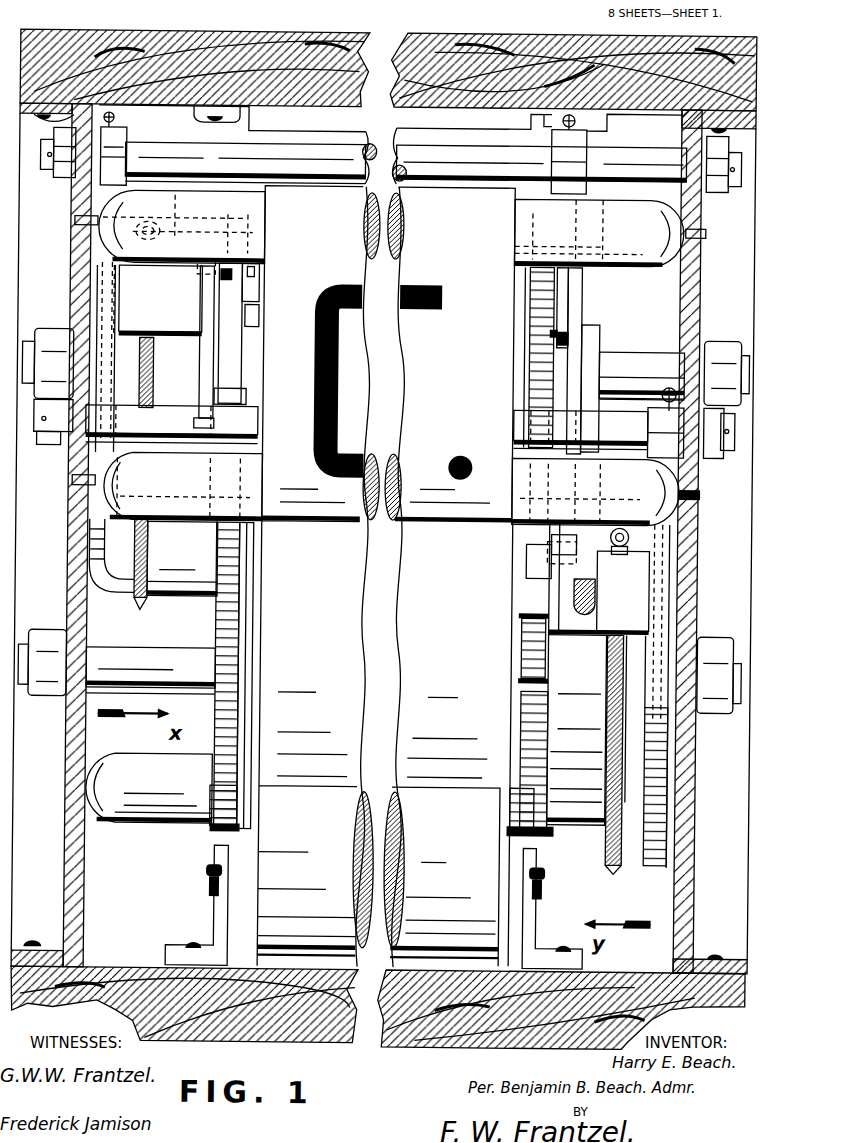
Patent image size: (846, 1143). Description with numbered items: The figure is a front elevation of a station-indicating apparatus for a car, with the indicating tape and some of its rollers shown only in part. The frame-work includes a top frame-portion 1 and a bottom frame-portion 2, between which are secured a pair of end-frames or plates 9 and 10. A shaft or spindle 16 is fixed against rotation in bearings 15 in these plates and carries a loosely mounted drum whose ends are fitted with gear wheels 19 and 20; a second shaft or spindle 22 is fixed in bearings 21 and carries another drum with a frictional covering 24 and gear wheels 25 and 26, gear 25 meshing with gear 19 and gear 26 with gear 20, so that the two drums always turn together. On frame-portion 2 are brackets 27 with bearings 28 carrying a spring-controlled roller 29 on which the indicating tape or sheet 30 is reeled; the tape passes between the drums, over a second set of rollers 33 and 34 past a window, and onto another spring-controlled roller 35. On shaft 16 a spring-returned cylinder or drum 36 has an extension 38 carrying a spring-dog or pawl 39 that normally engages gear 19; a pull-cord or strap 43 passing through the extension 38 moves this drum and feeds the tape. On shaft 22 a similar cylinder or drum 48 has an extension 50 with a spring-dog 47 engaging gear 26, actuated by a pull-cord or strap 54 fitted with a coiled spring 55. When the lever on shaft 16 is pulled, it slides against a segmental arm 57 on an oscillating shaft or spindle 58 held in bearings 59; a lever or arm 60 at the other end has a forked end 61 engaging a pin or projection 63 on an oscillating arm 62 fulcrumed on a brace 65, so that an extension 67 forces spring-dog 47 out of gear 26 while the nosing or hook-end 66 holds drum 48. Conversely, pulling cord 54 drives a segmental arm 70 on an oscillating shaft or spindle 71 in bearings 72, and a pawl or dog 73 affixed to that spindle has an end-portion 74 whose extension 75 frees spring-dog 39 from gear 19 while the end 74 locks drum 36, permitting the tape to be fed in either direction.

The frame-portion 1 is at (461, 40).
The frame-portion 2 is at (184, 1040).
The end-frame or plate 9 is at (66, 780).
The end-frame or plate 10 is at (690, 782).
The bearings 15 is at (50, 334).
The shaft or spindle 16 is at (648, 360).
The gear wheel 19 is at (245, 402).
The gear wheel 20 is at (540, 306).
The bearings 21 is at (47, 640).
The shaft or spindle 22 is at (151, 662).
The frictional covering 24 is at (383, 675).
The gear wheel 25 is at (235, 600).
The gear wheel 26 is at (530, 709).
The brackets 27 is at (232, 926).
The bearings 28 is at (212, 892).
The spring-controlled roller 29 is at (243, 840).
The indicating tape or sheet 30 is at (386, 577).
The roller 33 is at (392, 489).
The roller 34 is at (390, 229).
The spring-controlled roller 35 is at (405, 140).
The cylinder or drum 36 is at (163, 372).
The extension 38 is at (158, 301).
The spring-dog or pawl 39 is at (243, 377).
The pull-cord or strap 43 is at (150, 550).
The spring-dog 47 is at (530, 656).
The cylinder or drum 48 is at (577, 730).
The extension 50 is at (599, 592).
The pull-cord or strap 54 is at (616, 868).
The coiled spring 55 is at (632, 530).
The segmental arm 57 is at (116, 595).
The oscillating shaft or spindle 58 is at (157, 150).
The bearings 59 is at (62, 193).
The lever or arm 60 is at (567, 270).
The forked or bifurcated end 61 is at (580, 300).
The oscillating arm 62 is at (572, 340).
The pin or projection 63 is at (546, 333).
The brace 65 is at (597, 371).
The nosing or hook-end 66 is at (578, 580).
The extension 67 is at (535, 577).
The segmental arm 70 is at (652, 870).
The oscillating shaft or spindle 71 is at (384, 430).
The bearings 72 is at (60, 448).
The pawl or dog 73 is at (205, 305).
The end-portion 74 is at (196, 270).
The extension 75 is at (252, 279).